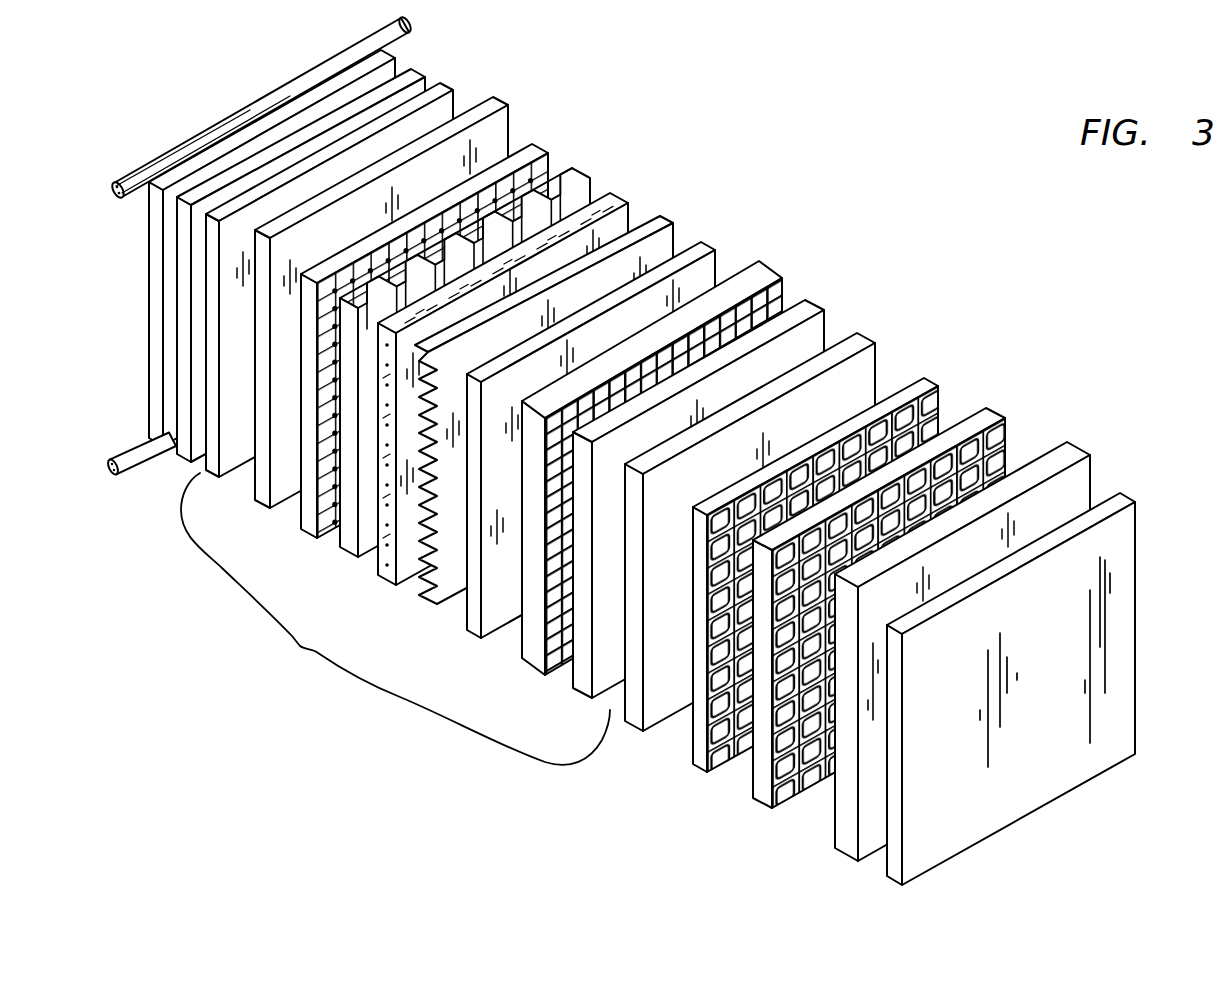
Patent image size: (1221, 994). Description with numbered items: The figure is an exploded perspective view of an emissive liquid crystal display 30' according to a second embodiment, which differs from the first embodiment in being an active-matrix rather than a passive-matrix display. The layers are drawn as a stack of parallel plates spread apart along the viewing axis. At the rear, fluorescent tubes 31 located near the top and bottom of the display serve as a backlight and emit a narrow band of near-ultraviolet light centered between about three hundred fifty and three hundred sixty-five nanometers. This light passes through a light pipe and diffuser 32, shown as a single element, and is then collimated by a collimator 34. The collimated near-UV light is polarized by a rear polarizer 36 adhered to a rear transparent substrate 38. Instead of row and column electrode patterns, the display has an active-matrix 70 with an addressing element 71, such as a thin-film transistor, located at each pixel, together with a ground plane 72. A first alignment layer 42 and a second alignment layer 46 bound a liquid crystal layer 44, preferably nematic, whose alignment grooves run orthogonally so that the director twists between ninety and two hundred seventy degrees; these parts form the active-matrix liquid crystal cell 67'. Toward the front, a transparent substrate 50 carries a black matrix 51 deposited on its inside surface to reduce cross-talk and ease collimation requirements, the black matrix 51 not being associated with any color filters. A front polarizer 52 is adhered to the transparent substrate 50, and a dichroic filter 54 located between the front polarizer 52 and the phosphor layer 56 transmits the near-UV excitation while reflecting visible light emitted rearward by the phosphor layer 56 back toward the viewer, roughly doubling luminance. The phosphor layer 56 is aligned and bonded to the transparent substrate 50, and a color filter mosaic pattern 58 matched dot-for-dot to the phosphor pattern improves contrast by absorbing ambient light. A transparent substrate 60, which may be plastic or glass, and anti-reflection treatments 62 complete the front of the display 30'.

The liquid crystal display 30' is at (887, 200).
The fluorescent tubes 31 is at (400, 22).
The light pipe and diffuser 32 is at (397, 57).
The collimator 34 is at (183, 462).
The rear polarizer 36 is at (446, 86).
The rear transparent substrate 38 is at (508, 104).
The active-matrix 70 is at (548, 148).
The addressing element 71 is at (331, 537).
The first alignment layer 42 is at (590, 177).
The liquid crystal layer 44 is at (627, 195).
The second alignment layer 46 is at (673, 222).
The ground plane 72 is at (715, 250).
The transparent substrate 50 is at (544, 676).
The black matrix 51 is at (783, 280).
The front polarizer 52 is at (592, 698).
The dichroic filter 54 is at (875, 340).
The phosphor layer 56 is at (940, 384).
The color filter mosaic pattern 58 is at (1005, 416).
The transparent substrate 60 is at (1090, 453).
The anti-reflection treatments 62 is at (1136, 501).
The liquid crystal cell 67' is at (395, 619).